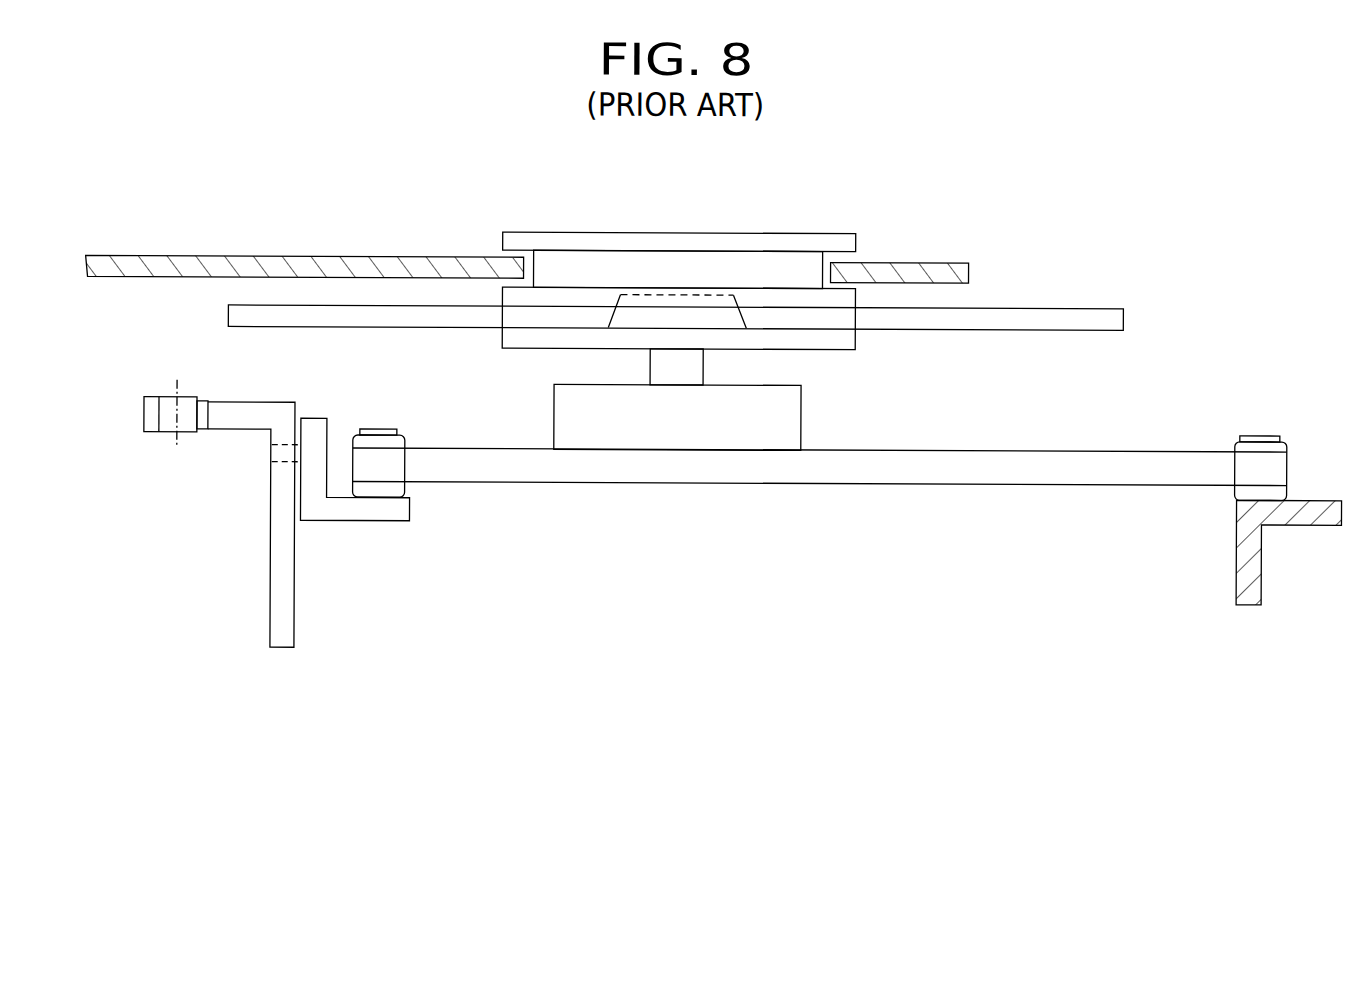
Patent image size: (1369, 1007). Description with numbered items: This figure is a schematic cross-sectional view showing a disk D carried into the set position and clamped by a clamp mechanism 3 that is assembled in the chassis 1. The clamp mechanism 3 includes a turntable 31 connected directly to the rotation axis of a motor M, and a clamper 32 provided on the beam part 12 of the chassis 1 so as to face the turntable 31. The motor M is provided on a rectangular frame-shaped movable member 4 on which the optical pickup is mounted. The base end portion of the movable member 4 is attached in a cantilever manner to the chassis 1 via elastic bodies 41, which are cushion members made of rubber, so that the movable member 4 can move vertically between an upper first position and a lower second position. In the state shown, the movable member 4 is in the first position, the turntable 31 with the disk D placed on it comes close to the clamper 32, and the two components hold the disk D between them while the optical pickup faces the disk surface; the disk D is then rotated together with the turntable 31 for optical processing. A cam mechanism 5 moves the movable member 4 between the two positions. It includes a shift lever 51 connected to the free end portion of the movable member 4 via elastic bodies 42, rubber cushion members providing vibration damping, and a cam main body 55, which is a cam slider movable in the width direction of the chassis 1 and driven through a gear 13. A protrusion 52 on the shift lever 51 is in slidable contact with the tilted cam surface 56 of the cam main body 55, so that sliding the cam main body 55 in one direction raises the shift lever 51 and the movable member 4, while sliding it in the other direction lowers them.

The chassis 1 is at (1237, 575).
The clamp mechanism 3 is at (712, 263).
The movable member 4 is at (970, 487).
The cam mechanism 5 is at (222, 517).
The beam part 12 is at (945, 262).
The gear 13 is at (144, 413).
The turntable 31 is at (855, 343).
The clamper 32 is at (579, 233).
The elastic bodies 41 is at (1235, 447).
The elastic bodies 42 is at (405, 440).
The shift lever 51 is at (383, 522).
The protrusion 52 is at (240, 488).
The cam main body 55 is at (295, 613).
The cam surface 56 is at (283, 461).
The disk D is at (1098, 307).
The motor M is at (801, 420).